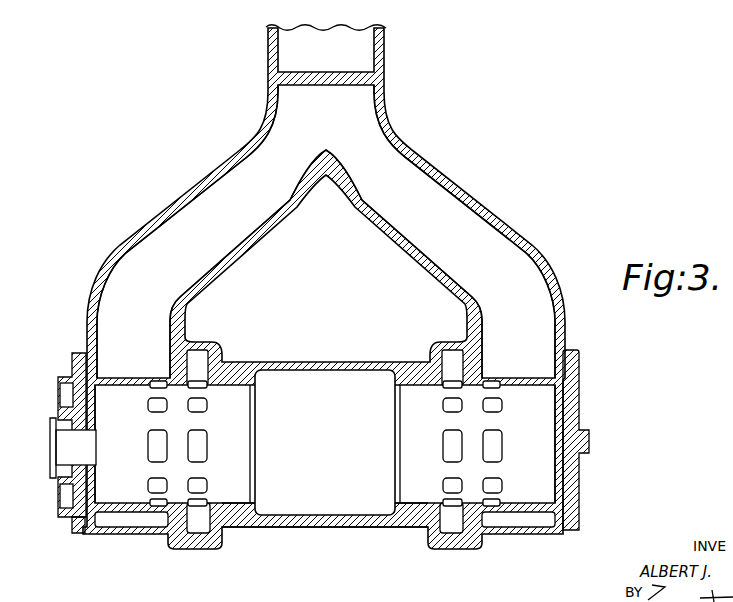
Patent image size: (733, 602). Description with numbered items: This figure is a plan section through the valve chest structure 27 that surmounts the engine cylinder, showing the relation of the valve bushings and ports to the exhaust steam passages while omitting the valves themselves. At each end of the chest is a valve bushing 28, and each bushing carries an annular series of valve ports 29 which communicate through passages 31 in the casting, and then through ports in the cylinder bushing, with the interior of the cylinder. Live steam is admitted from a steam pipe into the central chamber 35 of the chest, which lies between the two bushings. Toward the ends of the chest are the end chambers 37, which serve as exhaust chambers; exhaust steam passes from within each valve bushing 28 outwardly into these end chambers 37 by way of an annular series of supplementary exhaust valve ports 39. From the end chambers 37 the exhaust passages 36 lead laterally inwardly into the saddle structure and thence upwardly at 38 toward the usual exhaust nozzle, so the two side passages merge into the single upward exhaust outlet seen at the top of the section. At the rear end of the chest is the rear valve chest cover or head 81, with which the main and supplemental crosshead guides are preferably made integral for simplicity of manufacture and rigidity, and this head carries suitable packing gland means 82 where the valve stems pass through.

The valve chest structure 27 is at (332, 520).
The valve bushing 28 is at (415, 413).
The valve ports 29 is at (450, 486).
The passages 31 is at (450, 530).
The central chamber 35 is at (325, 442).
The exhaust passages 36 is at (326, 231).
The end chambers 37 is at (532, 520).
The upward exhaust extension 38 is at (324, 287).
The supplementary exhaust valve ports 39 is at (488, 482).
The rear valve chest cover 81 is at (82, 522).
The packing gland means 82 is at (53, 407).